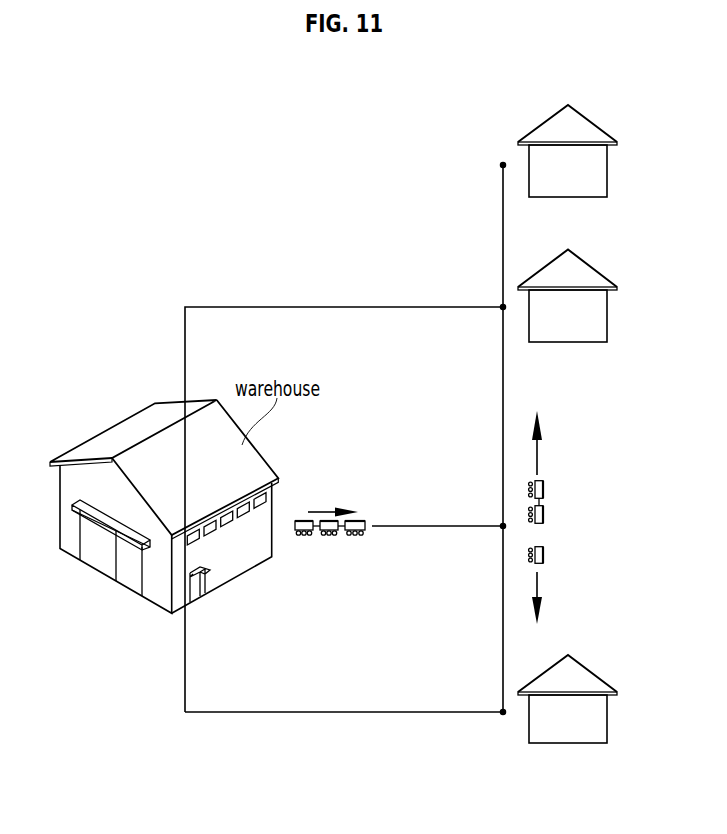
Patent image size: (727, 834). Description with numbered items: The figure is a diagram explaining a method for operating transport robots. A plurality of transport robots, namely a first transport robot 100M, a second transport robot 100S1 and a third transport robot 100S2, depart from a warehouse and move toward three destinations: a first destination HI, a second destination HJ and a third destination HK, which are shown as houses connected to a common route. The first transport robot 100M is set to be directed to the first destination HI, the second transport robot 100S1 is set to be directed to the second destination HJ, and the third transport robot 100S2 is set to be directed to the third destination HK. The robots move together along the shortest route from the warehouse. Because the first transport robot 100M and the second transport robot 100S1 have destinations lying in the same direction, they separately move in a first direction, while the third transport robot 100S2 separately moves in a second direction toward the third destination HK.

The first transport robot 100M is at (353, 538).
The second transport robot 100S1 is at (328, 521).
The third transport robot 100S2 is at (302, 538).
The second destination HJ is at (598, 122).
The first destination HI is at (598, 268).
The third destination HK is at (598, 672).